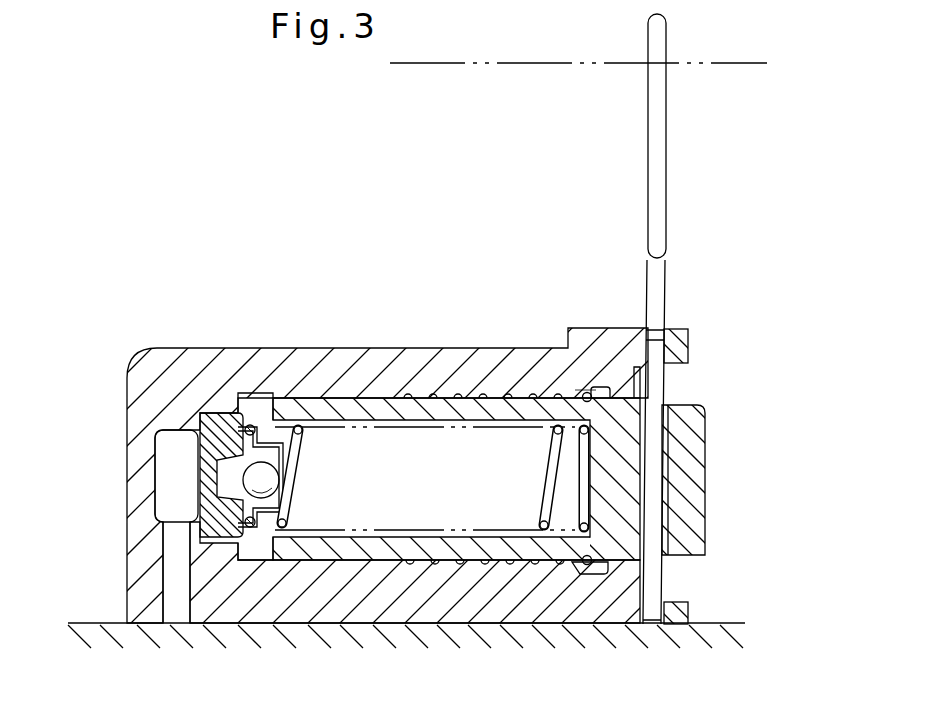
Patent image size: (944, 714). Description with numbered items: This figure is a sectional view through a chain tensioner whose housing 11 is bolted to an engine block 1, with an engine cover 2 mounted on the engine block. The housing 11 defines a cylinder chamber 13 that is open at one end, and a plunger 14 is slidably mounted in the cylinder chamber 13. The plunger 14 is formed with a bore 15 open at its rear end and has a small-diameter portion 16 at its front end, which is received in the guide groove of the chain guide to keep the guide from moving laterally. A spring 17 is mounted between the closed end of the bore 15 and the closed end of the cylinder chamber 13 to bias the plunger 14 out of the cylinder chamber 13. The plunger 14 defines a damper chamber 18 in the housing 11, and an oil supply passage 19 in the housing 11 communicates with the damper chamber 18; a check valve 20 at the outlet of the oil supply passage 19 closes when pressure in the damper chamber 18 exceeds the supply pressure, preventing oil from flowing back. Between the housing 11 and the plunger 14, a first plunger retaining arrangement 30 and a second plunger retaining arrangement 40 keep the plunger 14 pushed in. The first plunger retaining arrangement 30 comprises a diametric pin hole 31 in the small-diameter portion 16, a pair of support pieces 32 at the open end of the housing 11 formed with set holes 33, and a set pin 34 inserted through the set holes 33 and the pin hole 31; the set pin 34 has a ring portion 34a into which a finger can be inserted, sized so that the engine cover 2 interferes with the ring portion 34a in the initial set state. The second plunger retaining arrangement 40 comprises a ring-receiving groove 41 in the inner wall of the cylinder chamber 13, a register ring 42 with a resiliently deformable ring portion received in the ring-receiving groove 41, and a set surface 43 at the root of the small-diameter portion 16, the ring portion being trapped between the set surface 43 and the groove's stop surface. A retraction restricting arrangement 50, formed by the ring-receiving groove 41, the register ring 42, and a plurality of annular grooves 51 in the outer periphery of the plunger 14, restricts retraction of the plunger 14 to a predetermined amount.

The engine block 1 is at (105, 622).
The engine cover 2 is at (460, 63).
The housing 11 is at (215, 348).
The cylinder chamber 13 is at (341, 395).
The plunger 14 is at (398, 410).
The bore 15 is at (466, 427).
The small-diameter portion 16 is at (690, 460).
The spring 17 is at (548, 440).
The damper chamber 18 is at (257, 395).
The oil supply passage 19 is at (182, 572).
The check valve 20 is at (242, 480).
The first plunger retaining arrangement 30 is at (497, 357).
The pin hole 31 is at (662, 430).
The support pieces 32 is at (672, 343).
The set holes 33 is at (655, 333).
The set pin 34 is at (659, 272).
The ring portion 34a is at (664, 123).
The second plunger retaining arrangement 40 is at (588, 566).
The ring-receiving groove 41 is at (600, 575).
The register ring 42 is at (590, 392).
The set surface 43 is at (648, 390).
The retraction restricting arrangement 50 is at (580, 385).
The annular grooves 51 is at (490, 562).